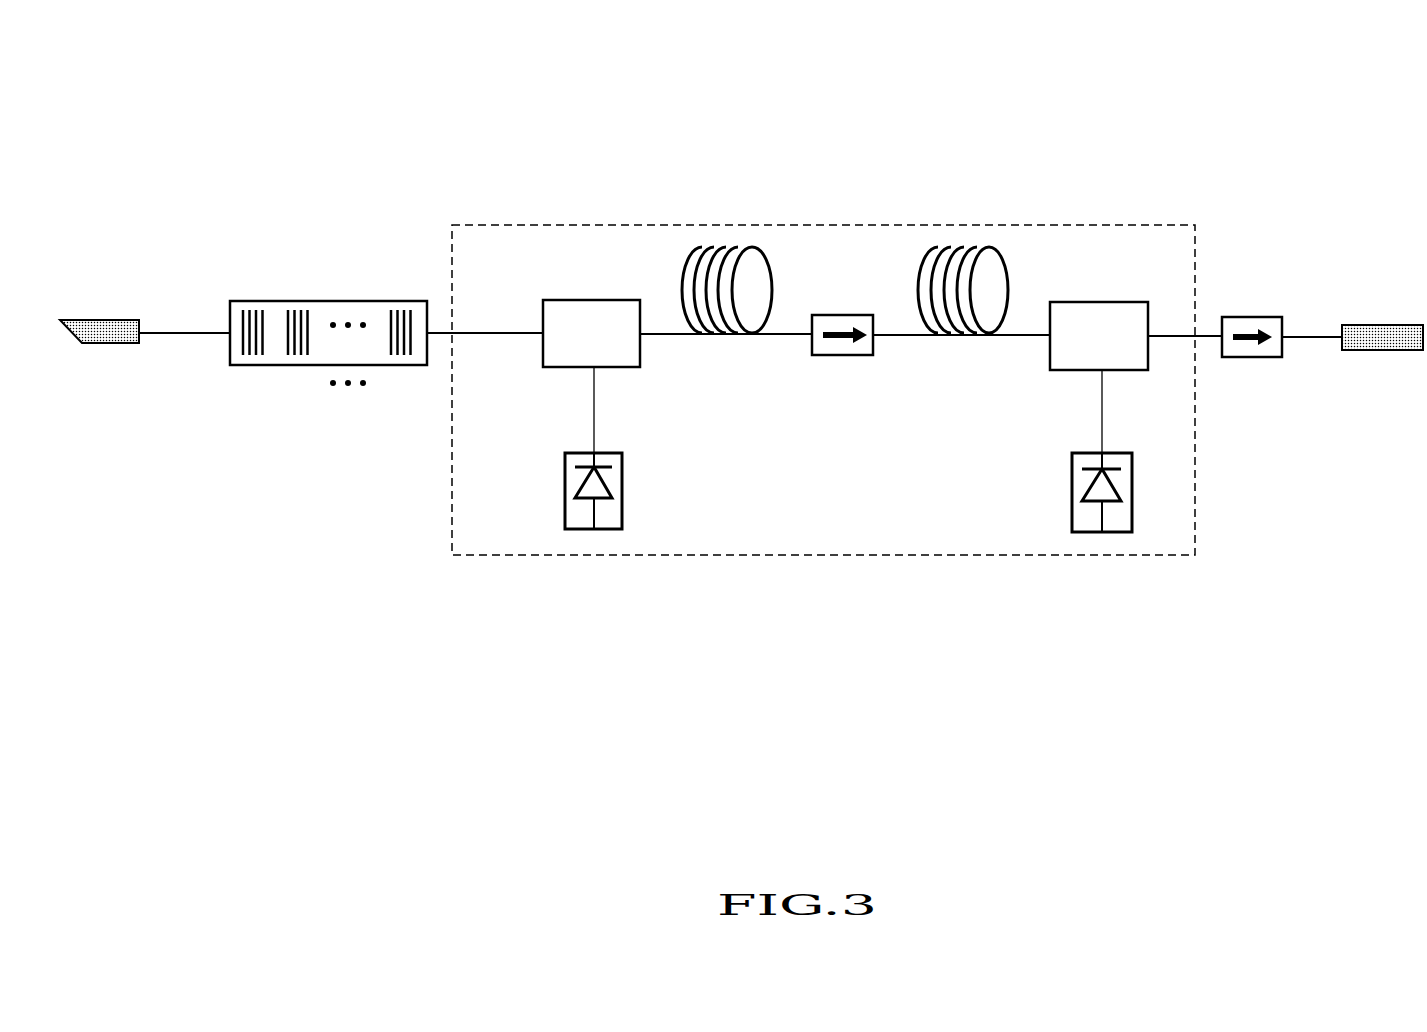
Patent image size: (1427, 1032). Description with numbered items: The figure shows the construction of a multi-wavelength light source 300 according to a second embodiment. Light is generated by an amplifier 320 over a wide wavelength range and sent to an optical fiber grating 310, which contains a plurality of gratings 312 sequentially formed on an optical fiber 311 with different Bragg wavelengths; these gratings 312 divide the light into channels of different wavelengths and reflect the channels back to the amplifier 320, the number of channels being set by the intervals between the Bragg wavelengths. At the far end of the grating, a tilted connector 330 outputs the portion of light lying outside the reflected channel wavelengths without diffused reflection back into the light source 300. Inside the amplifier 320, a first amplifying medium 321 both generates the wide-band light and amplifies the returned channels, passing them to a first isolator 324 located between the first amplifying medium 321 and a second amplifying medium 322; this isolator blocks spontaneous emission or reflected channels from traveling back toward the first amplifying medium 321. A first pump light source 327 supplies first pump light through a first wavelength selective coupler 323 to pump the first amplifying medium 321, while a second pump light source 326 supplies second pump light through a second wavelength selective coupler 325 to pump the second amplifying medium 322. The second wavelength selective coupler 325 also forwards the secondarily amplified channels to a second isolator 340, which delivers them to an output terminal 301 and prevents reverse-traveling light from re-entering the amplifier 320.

The multi-wavelength light source 300 is at (810, 113).
The output terminal 301 is at (1380, 352).
The optical fiber grating 310 is at (397, 262).
The optical fiber 311 is at (231, 347).
The gratings 312 is at (393, 305).
The amplifier 320 is at (945, 219).
The first amplifying medium 321 is at (727, 337).
The second amplifying medium 322 is at (965, 337).
The first wavelength selective coupler 323 is at (543, 316).
The first isolator 324 is at (845, 357).
The second wavelength selective coupler 325 is at (1140, 302).
The second pump light source 326 is at (1072, 492).
The first pump light source 327 is at (622, 488).
The tilted connector 330 is at (99, 318).
The second isolator 340 is at (1253, 357).